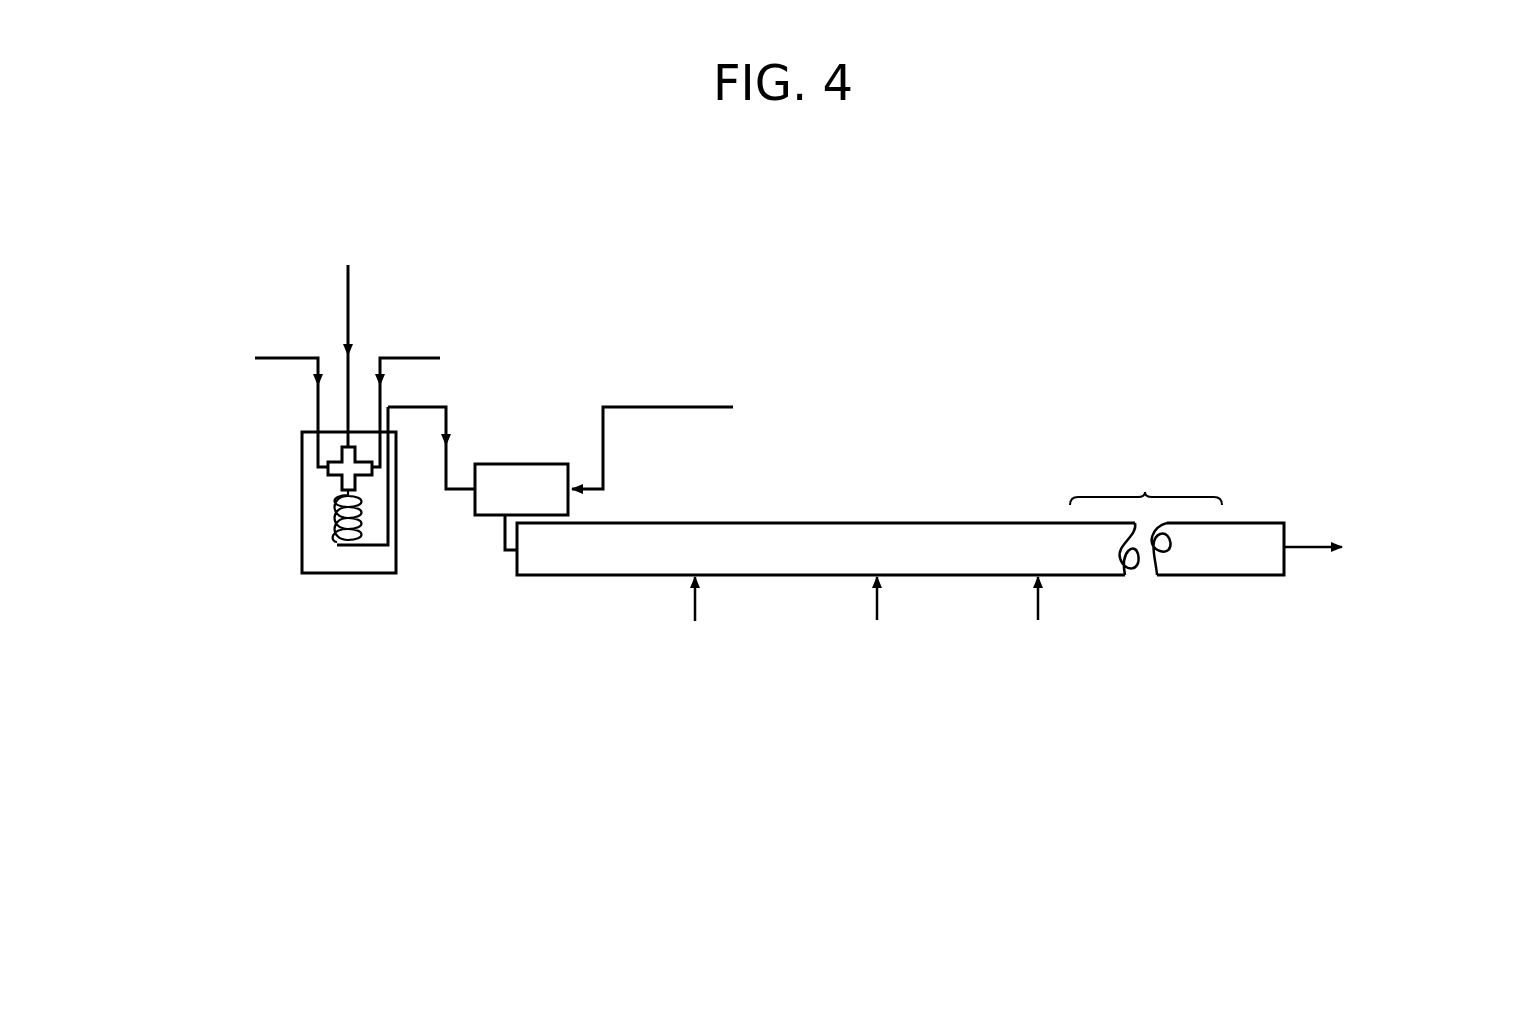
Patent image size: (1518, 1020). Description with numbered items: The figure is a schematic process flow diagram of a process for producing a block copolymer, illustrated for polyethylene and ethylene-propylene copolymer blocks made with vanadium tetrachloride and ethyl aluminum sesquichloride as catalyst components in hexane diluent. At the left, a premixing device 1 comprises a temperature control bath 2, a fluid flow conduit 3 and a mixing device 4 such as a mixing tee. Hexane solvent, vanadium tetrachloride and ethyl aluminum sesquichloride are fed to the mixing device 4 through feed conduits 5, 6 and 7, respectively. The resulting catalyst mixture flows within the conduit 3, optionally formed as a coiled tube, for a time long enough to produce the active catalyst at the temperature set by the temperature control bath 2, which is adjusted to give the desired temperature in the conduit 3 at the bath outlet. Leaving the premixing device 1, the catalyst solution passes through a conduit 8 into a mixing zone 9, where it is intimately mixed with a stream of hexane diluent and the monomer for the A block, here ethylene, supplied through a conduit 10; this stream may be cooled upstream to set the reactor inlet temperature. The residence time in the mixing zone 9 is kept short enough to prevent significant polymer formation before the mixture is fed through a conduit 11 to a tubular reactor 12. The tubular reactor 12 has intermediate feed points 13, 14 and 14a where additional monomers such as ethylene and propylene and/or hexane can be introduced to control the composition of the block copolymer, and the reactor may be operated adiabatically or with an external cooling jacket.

The premixing device 1 is at (280, 530).
The temperature control bath 2 is at (378, 555).
The fluid flow conduit 3 is at (337, 543).
The mixing device 4 is at (330, 477).
The feed conduit 5 is at (350, 322).
The feed conduit 6 is at (283, 357).
The feed conduit 7 is at (405, 356).
The conduit 8 is at (415, 407).
The mixing zone 9 is at (520, 463).
The conduit 10 is at (655, 407).
The conduit 11 is at (500, 540).
The tubular reactor 12 is at (611, 578).
The intermediate feed point 13 is at (687, 627).
The intermediate feed point 14 is at (857, 627).
The intermediate feed point 14a is at (1017, 627).